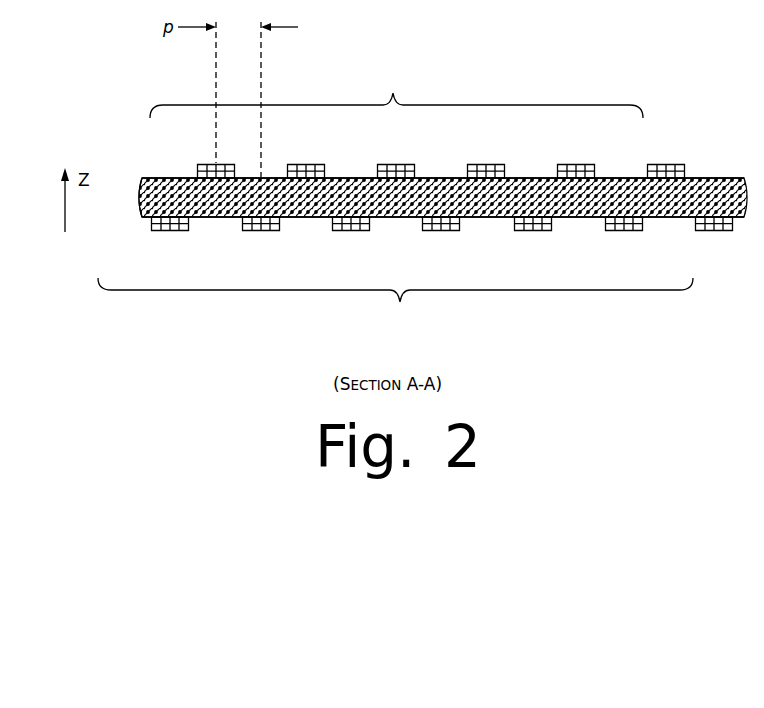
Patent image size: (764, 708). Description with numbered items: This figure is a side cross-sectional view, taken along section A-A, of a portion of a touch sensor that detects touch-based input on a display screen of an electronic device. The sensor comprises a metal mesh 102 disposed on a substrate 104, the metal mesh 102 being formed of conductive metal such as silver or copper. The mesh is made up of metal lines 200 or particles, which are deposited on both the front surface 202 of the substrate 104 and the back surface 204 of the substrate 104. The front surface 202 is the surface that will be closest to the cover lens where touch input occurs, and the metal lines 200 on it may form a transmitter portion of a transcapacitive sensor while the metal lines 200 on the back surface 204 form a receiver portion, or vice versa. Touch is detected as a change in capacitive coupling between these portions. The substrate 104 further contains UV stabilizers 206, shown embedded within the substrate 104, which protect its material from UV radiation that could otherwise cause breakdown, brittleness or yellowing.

The metal mesh 102 is at (395, 199).
The substrate 104 is at (142, 178).
The metal lines 200 is at (215, 163).
The front surface 202 is at (720, 162).
The back surface 204 is at (735, 252).
The UV stabilizers 206 is at (140, 218).